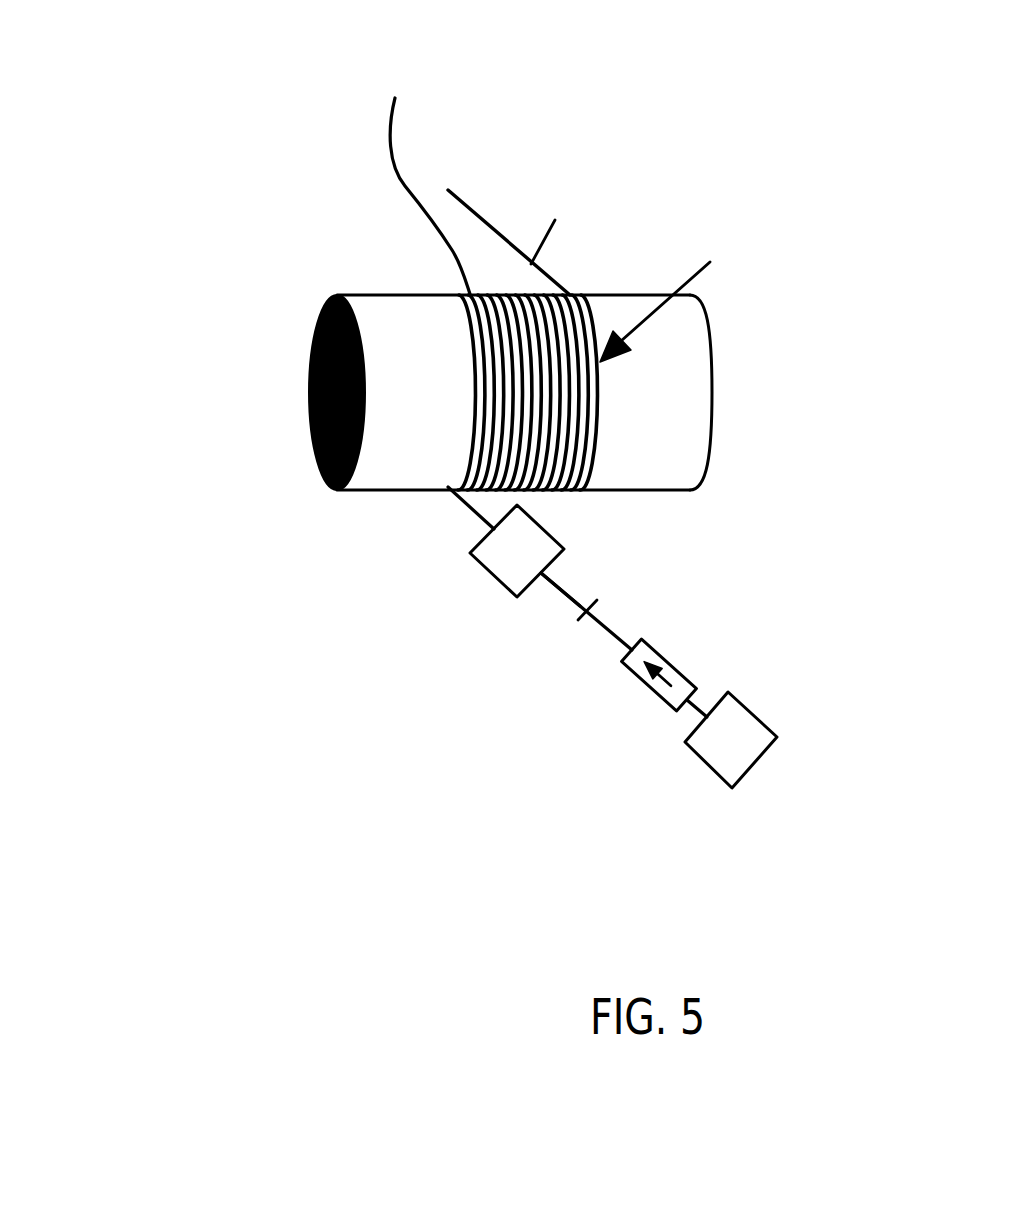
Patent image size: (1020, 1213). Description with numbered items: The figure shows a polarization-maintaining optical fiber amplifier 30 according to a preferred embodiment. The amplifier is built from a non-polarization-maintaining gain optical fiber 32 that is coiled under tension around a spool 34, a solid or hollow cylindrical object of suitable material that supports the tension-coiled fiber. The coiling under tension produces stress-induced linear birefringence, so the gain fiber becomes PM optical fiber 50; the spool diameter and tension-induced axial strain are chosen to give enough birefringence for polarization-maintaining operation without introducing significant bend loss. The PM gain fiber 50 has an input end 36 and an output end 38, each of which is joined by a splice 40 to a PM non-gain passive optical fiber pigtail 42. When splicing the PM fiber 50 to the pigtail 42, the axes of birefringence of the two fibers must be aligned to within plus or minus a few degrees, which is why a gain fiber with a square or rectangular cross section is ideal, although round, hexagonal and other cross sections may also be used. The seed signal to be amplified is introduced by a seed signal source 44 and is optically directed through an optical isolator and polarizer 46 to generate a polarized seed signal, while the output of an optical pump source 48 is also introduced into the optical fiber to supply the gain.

The polarization-maintaining optical fiber amplifier 30 is at (203, 393).
The non-polarization-maintaining gain optical fiber 32 is at (469, 293).
The spool 34 is at (356, 294).
The input end 36 is at (562, 595).
The output end 38 is at (552, 278).
The splice 40 is at (465, 713).
The PM non-gain optical fiber pigtail 42 is at (467, 200).
The seed signal source 44 is at (698, 763).
The optical isolator and polarizer 46 is at (642, 693).
The optical pump source 48 is at (490, 573).
The PM optical fiber 50 is at (429, 155).